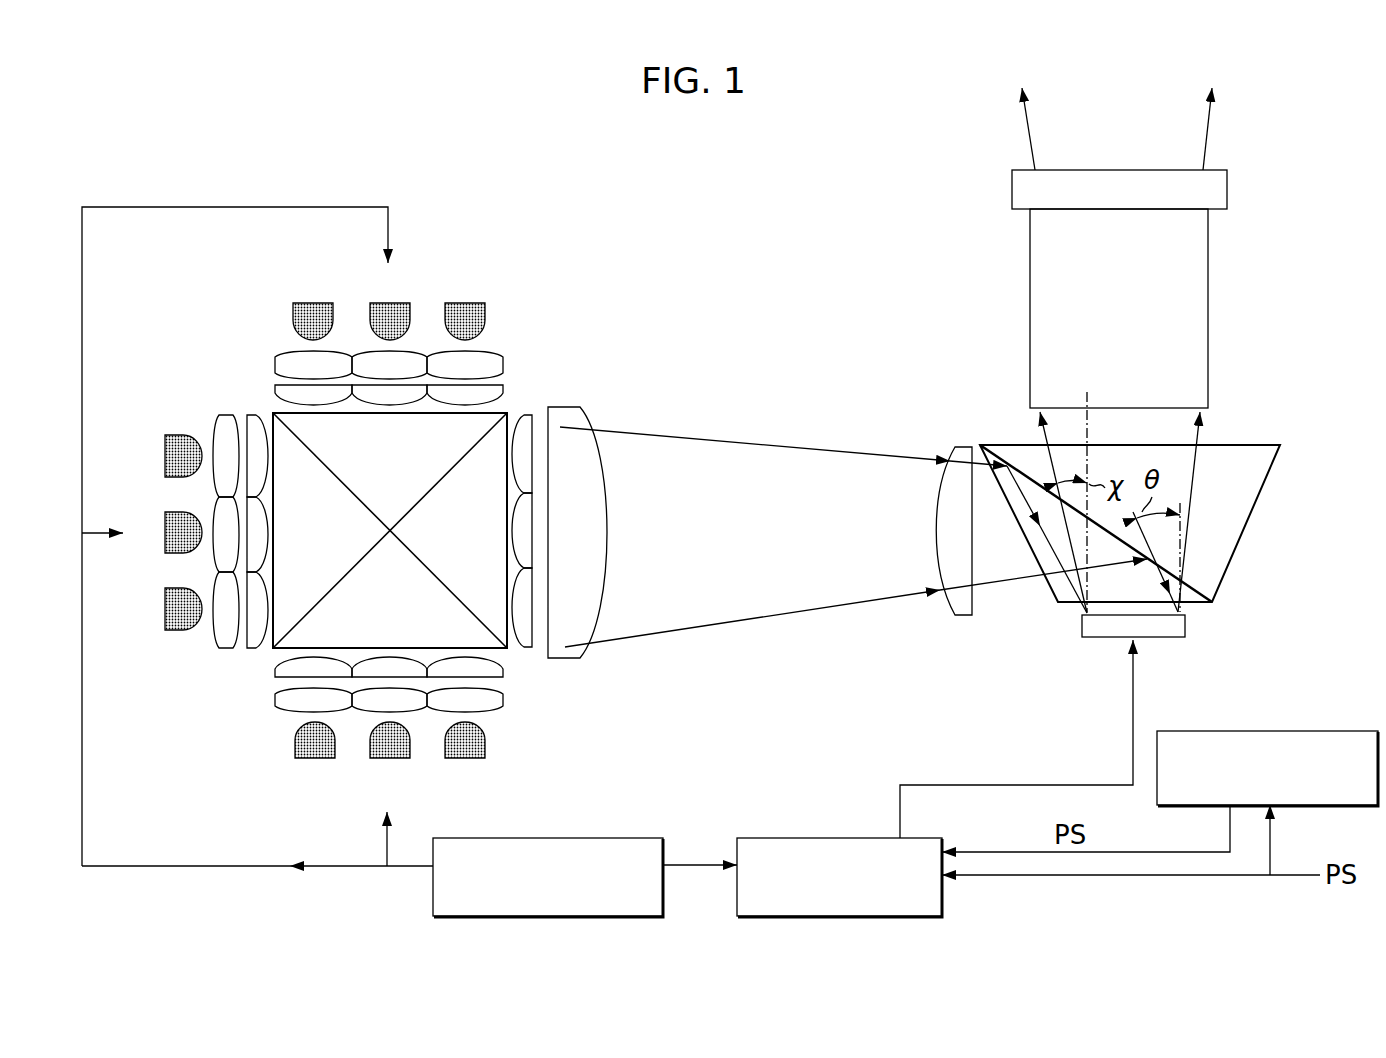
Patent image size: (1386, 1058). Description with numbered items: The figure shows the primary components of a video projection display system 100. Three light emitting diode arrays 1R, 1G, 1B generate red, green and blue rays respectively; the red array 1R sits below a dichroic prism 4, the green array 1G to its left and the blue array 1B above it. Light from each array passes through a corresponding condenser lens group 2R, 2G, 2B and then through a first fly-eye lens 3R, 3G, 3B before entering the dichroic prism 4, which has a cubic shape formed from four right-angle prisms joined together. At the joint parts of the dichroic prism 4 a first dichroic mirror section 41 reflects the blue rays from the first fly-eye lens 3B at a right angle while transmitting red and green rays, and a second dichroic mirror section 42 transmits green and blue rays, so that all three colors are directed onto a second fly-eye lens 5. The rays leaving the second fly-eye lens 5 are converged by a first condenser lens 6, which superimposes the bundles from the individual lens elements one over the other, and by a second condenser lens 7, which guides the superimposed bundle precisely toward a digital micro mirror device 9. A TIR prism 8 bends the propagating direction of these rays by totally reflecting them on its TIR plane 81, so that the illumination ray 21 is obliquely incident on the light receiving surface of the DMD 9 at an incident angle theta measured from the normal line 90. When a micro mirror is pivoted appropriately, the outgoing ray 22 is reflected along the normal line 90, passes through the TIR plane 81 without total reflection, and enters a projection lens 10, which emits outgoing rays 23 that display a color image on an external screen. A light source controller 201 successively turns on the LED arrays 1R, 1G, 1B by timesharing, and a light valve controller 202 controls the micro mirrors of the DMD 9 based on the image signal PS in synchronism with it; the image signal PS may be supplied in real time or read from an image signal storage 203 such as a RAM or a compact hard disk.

The LED array 1G is at (165, 610).
The condenser lens group 2G is at (212, 632).
The first fly-eye lens 3G is at (250, 645).
The LED array 1B is at (318, 303).
The condenser lens group 2B is at (480, 355).
The first fly-eye lens 3B is at (492, 395).
The LED array 1R is at (455, 762).
The condenser lens group 2R is at (285, 707).
The first fly-eye lens 3R is at (278, 675).
The dichroic prism 4 is at (410, 564).
The first dichroic mirror section 41 is at (347, 485).
The second dichroic mirror section 42 is at (423, 503).
The second fly-eye lens 5 is at (537, 412).
The first condenser lens 6 is at (585, 590).
The second condenser lens 7 is at (955, 610).
The TIR prism 8 is at (1146, 523).
The TIR plane 81 is at (1183, 593).
The illumination light incident on light valve 21 is at (1135, 578).
The outgoing ray 22 is at (1055, 468).
The digital micro mirror device 9 is at (1173, 640).
The normal line 90 is at (1090, 422).
The projection lens 10 is at (1195, 302).
The outgoing rays 23 is at (1032, 137).
The video projection display system 100 is at (655, 787).
The light source controller 201 is at (550, 838).
The light valve controller 202 is at (815, 838).
The image signal storage 203 is at (1272, 731).